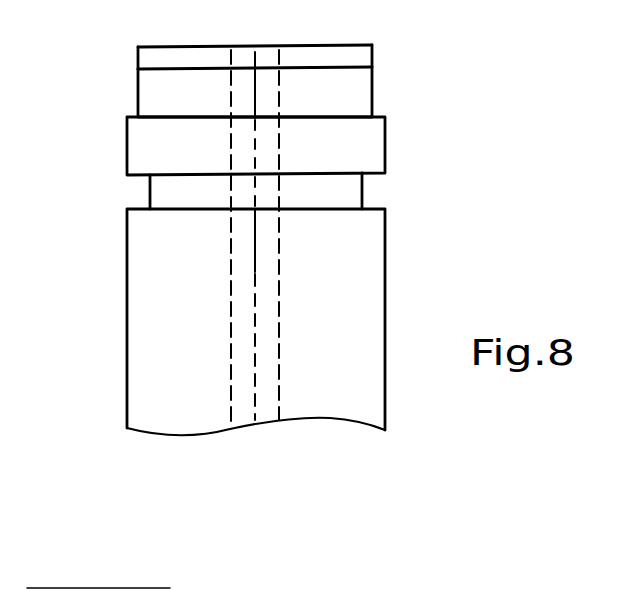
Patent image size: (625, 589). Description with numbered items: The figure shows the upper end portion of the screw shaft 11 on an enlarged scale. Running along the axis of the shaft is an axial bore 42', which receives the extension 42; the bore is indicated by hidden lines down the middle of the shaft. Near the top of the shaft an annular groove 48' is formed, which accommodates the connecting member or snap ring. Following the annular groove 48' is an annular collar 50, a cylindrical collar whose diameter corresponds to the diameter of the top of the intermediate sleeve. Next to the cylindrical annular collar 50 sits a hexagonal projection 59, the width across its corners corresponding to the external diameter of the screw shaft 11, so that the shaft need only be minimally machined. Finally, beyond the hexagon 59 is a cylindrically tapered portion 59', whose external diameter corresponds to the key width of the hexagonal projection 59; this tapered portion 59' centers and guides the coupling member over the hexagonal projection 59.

The cylindrically tapered portion 59' is at (320, 34).
The hexagonal projection 59 is at (316, 92).
The annular collar 50 is at (357, 144).
The annular groove 48' is at (327, 206).
The screw shaft 11 is at (155, 251).
The extension 42 is at (234, 280).
The axial bore 42' is at (147, 236).